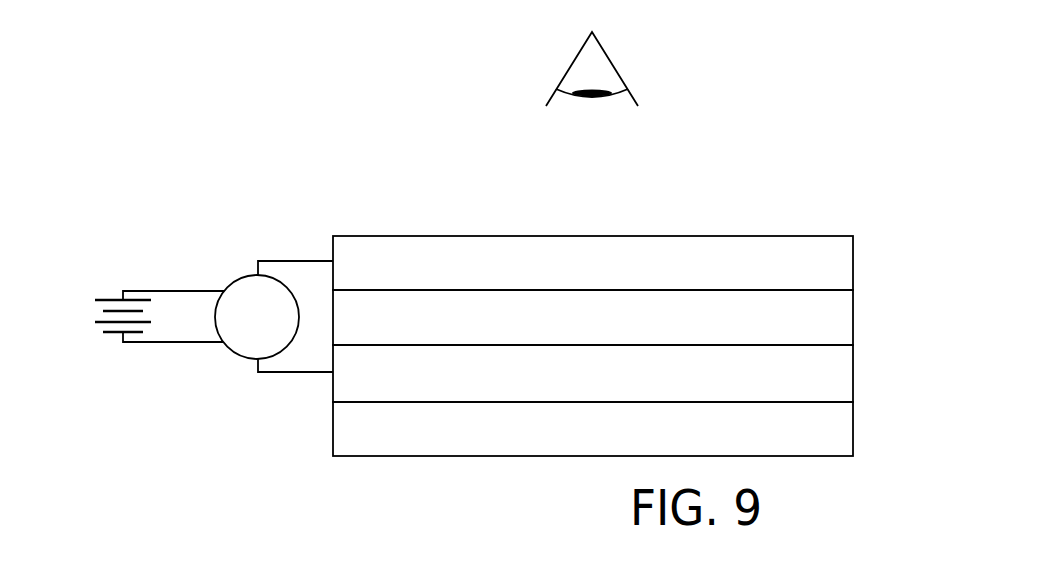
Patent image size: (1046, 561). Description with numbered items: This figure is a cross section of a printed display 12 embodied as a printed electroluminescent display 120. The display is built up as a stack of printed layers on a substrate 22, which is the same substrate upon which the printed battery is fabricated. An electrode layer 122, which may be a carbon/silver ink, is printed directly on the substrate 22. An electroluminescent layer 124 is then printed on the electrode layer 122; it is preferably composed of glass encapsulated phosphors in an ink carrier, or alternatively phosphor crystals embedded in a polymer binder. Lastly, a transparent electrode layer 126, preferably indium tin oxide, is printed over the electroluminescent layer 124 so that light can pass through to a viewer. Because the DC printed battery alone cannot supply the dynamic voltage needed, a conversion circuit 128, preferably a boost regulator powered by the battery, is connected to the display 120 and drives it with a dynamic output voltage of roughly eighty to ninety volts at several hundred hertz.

The printed electroluminescent display 120 is at (800, 152).
The transparent electrode layer 126 is at (832, 260).
The electroluminescent layer 124 is at (828, 318).
The electrode layer 122 is at (830, 374).
The substrate 22 is at (829, 435).
The conversion circuit 128 is at (232, 284).
The printed display 12 is at (94, 338).